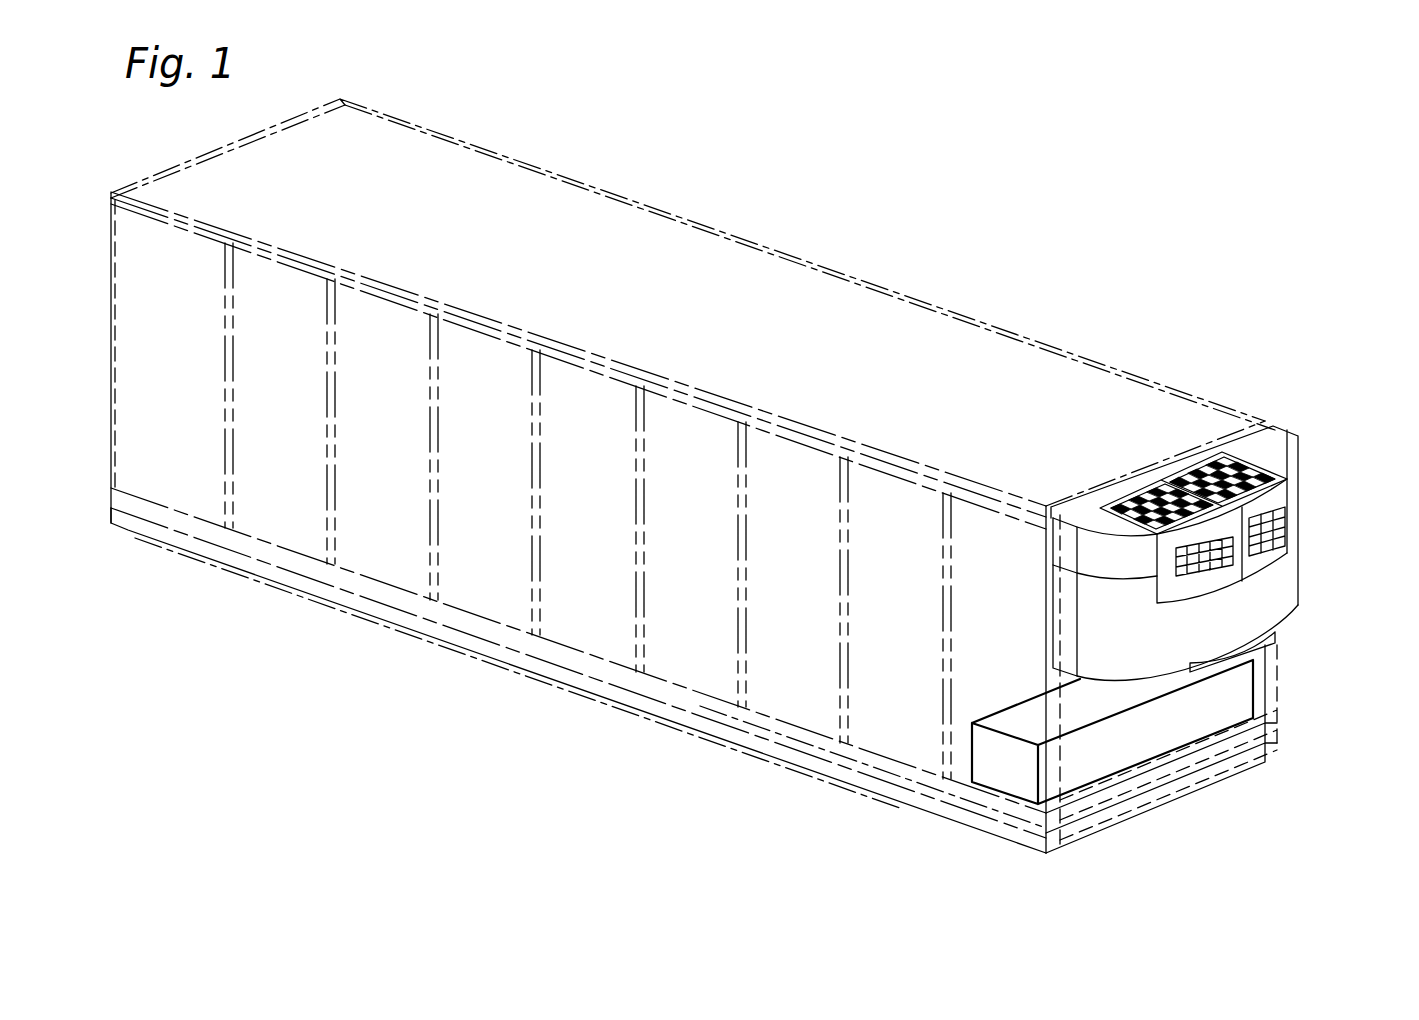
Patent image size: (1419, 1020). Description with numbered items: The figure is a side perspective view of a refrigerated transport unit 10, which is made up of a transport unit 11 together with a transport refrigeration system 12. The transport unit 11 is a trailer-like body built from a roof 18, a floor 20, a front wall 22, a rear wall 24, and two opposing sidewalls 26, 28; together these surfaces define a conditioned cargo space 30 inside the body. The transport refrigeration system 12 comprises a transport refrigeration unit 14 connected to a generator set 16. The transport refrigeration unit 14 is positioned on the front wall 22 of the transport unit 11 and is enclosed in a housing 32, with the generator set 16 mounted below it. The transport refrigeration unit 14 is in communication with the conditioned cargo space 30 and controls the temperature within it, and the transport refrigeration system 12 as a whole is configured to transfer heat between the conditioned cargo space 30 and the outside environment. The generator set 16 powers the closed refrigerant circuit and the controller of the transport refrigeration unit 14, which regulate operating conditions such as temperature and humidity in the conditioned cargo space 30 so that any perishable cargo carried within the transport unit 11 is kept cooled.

The refrigerated transport unit 10 is at (890, 193).
The transport unit 11 is at (1050, 343).
The transport refrigeration system 12 is at (1305, 385).
The transport refrigeration unit 14 is at (1302, 583).
The generator set 16 is at (1237, 710).
The roof 18 is at (387, 150).
The floor 20 is at (610, 672).
The front wall 22 is at (1270, 675).
The rear wall 24 is at (212, 195).
The sidewall 26 is at (483, 567).
The sidewall 28 is at (553, 232).
The conditioned cargo space 30 is at (917, 420).
The housing 32 is at (1296, 527).